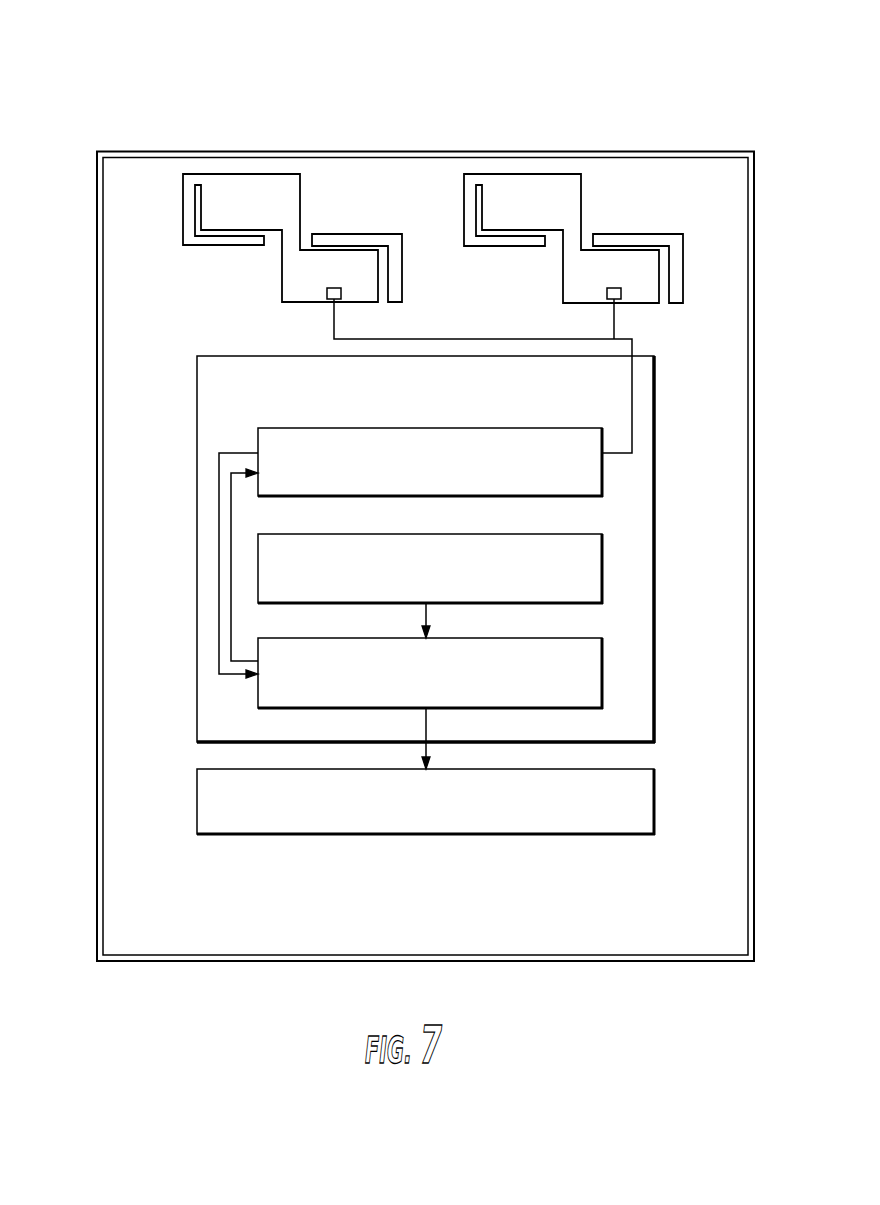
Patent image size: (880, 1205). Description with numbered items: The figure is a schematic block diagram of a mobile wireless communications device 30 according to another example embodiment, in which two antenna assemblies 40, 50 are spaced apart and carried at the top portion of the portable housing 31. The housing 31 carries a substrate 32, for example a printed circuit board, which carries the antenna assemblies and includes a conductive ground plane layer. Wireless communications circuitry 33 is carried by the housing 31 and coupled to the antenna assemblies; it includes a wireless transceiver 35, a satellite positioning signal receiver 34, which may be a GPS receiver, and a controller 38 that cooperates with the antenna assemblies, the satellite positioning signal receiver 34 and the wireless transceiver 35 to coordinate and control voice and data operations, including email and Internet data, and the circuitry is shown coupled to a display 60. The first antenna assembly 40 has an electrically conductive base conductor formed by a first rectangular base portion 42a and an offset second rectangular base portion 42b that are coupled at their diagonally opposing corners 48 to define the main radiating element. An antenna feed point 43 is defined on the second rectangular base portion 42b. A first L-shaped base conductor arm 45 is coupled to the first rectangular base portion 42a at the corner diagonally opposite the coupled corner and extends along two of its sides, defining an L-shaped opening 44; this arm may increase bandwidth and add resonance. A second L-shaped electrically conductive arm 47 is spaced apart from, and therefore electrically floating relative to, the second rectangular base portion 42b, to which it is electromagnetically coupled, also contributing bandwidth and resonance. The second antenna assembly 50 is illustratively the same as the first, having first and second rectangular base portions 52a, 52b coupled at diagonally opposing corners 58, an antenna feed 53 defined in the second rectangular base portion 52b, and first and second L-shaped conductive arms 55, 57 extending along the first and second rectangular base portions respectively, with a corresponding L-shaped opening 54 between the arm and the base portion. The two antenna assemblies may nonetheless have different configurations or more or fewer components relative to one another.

The mobile wireless communications device 30 is at (323, 88).
The housing 31 is at (97, 432).
The substrate 32 is at (130, 518).
The wireless communications circuitry 33 is at (657, 388).
The satellite positioning signal receiver 34 is at (603, 555).
The wireless transceiver 35 is at (603, 475).
The controller 38 is at (603, 663).
The antenna assembly 40 is at (245, 135).
The first rectangular base portion 42a is at (250, 197).
The second rectangular base portion 42b is at (298, 263).
The antenna feed point 43 is at (330, 300).
The L-shaped opening 44 is at (198, 203).
The first L-shaped base conductor arm 45 is at (189, 223).
The second L-shaped electrically conductive arm 47 is at (335, 238).
The diagonally opposing corners 48 is at (292, 230).
The second antenna assembly 50 is at (482, 130).
The first rectangular base portion 52a is at (566, 187).
The second rectangular base portion 52b is at (640, 267).
The antenna feed 53 is at (620, 293).
The slot 54 is at (478, 186).
The first L-shaped conductive arm 55 is at (470, 229).
The second L-shaped conductive arm 57 is at (642, 240).
The diagonally opposing corners 58 is at (572, 214).
The display 60 is at (657, 813).